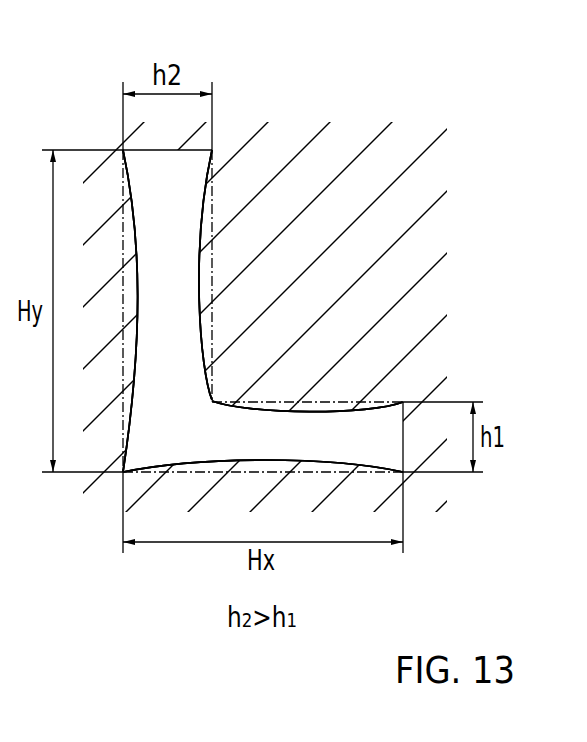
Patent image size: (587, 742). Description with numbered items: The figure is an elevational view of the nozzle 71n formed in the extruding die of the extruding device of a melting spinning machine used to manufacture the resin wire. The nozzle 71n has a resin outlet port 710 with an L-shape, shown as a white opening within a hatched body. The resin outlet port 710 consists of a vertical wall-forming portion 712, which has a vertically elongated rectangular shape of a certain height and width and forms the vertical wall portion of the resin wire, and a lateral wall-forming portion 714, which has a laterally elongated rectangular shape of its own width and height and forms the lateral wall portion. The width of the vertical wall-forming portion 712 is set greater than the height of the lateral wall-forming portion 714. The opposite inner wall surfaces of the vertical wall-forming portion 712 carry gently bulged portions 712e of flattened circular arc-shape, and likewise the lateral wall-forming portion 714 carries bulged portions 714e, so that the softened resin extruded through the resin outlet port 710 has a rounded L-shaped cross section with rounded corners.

The resin outlet port 710 is at (153, 406).
The vertical wall-forming portion 712 is at (187, 183).
The bulged portions 712e is at (134, 289).
The lateral wall-forming portion 714 is at (340, 435).
The bulged portions 714e is at (322, 400).
The nozzle 71n is at (342, 212).